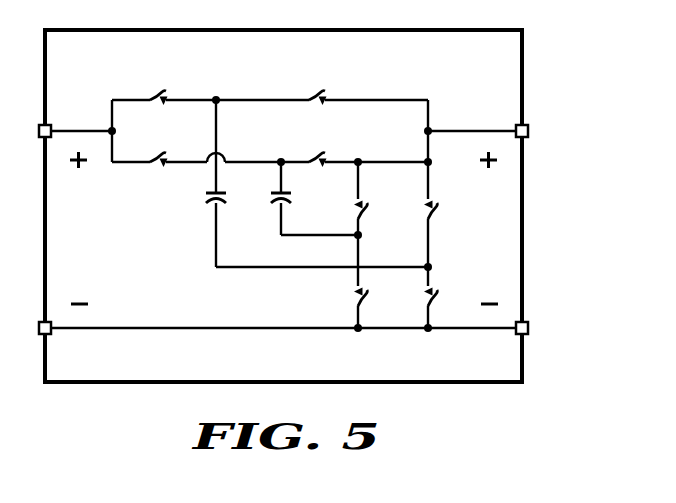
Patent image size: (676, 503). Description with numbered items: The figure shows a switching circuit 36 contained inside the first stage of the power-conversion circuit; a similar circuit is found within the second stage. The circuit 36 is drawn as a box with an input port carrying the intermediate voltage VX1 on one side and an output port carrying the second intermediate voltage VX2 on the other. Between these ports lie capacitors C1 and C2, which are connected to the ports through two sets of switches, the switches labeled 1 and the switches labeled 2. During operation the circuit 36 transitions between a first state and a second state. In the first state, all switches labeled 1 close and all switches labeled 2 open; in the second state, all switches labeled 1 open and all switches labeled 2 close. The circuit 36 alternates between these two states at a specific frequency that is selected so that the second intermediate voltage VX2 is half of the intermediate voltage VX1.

The circuit 36 is at (283, 206).
The switches labeled "1" 1 is at (293, 198).
The switches labeled "2" 2 is at (293, 198).
The first flying capacitor C1 is at (201, 207).
The second flying capacitor C2 is at (267, 207).
The intermediate voltage VX1 is at (66, 229).
The second intermediate voltage VX2 is at (496, 229).